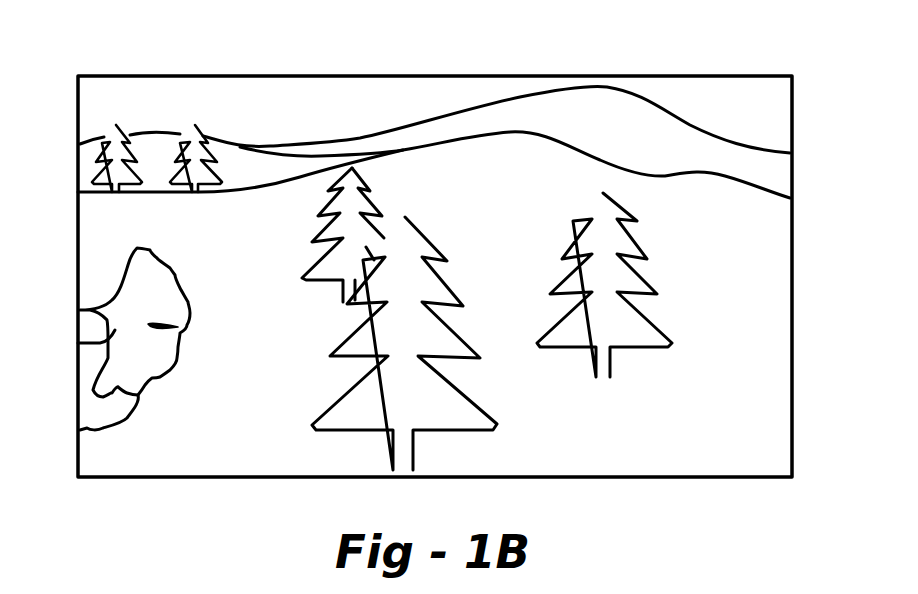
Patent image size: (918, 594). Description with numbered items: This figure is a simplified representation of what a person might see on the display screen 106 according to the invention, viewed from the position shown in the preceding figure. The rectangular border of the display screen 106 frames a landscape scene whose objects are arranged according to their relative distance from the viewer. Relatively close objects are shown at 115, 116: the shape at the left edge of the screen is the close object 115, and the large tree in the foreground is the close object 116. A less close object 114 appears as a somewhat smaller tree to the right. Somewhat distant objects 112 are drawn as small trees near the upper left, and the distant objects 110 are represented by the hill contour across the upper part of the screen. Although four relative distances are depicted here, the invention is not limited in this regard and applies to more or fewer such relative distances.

The display screen 106 is at (693, 74).
The distant objects 110 is at (598, 107).
The somewhat distant objects 112 is at (188, 137).
The less close objects 114 is at (633, 327).
The relatively close object 115 is at (147, 375).
The relatively close object 116 is at (478, 418).